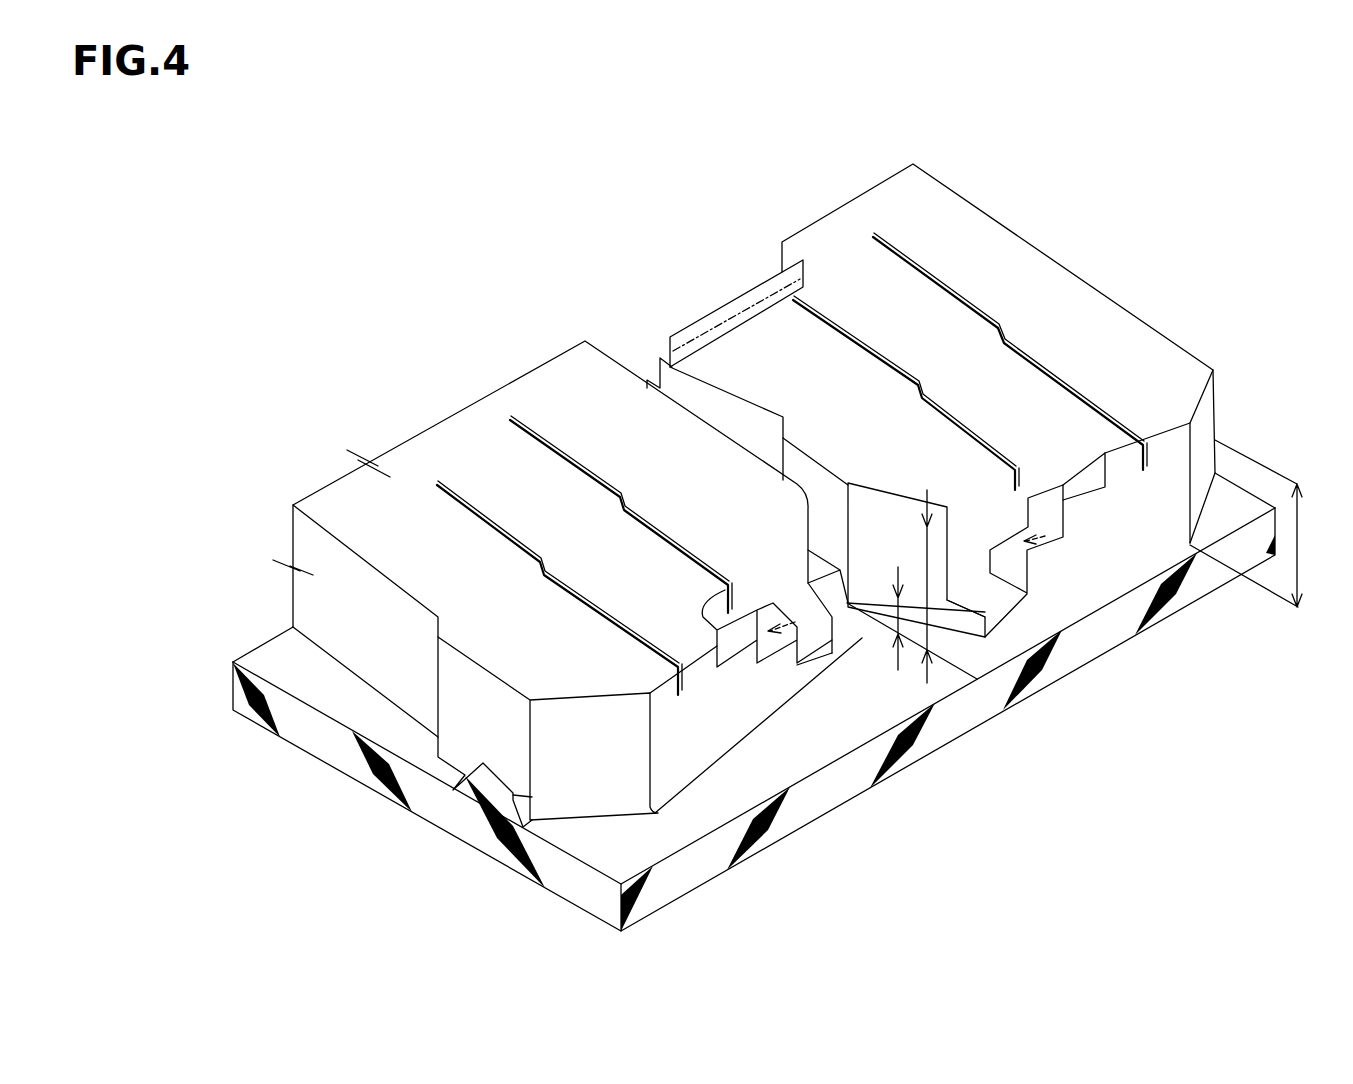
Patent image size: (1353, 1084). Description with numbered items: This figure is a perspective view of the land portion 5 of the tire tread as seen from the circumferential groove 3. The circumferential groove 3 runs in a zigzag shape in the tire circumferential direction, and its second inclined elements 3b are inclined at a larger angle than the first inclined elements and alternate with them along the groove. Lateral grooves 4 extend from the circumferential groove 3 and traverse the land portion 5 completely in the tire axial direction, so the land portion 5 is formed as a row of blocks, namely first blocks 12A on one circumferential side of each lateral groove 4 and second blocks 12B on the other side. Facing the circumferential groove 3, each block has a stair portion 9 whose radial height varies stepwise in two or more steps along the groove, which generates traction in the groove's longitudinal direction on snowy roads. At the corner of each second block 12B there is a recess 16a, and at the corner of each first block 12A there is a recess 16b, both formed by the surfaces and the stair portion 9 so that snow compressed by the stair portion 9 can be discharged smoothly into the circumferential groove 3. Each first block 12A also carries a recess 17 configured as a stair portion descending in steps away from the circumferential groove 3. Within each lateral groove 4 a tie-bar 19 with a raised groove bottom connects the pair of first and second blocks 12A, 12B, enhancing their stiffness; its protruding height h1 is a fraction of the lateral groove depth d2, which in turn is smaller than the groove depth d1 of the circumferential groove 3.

The circumferential groove 3 is at (679, 818).
The second inclined elements 3b is at (878, 677).
The lateral grooves 4 is at (721, 398).
The land portion 5 is at (1095, 254).
The stair portion 9 is at (790, 612).
The first blocks 12A is at (919, 196).
The second blocks 12B is at (583, 377).
The recess 16a is at (765, 581).
The recess 16b is at (1041, 496).
The recess 17 is at (759, 256).
The tie-bars 19 is at (822, 600).
The groove depth d1 is at (1263, 523).
The groove depth d2 is at (985, 575).
The protruding height h1 is at (928, 686).